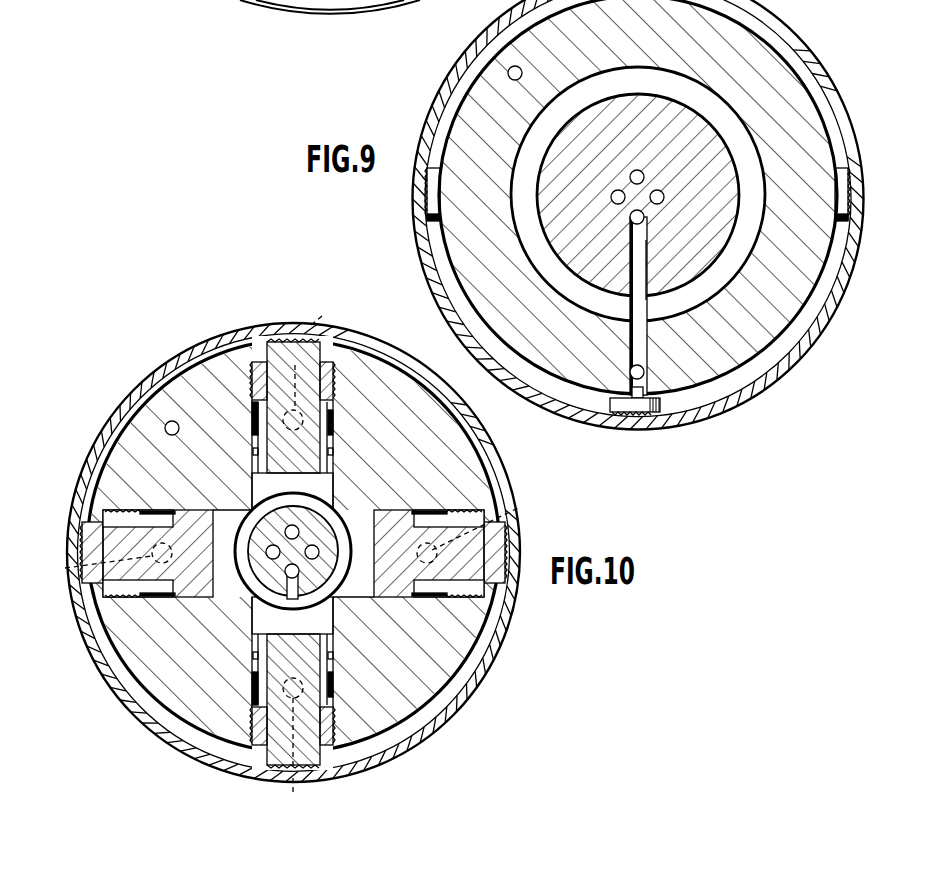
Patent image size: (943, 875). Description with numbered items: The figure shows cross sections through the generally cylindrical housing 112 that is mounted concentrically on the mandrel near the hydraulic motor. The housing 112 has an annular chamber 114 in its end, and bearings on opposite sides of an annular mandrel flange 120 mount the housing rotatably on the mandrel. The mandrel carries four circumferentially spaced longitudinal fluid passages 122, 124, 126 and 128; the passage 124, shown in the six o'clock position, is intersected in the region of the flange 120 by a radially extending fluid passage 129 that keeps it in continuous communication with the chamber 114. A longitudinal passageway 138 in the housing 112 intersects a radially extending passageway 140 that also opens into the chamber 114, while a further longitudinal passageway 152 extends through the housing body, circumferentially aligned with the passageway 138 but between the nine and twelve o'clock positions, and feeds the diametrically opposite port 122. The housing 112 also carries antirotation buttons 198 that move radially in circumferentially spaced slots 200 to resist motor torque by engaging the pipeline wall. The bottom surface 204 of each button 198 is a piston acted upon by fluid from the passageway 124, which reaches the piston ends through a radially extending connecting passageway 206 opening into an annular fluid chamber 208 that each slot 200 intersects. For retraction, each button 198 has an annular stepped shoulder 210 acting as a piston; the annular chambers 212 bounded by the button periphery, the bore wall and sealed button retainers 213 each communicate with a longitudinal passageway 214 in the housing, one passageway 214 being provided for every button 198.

In FIG. 9, the housing 112 is at (772, 72).
In FIG. 9, the annular chamber 114 is at (729, 137).
In FIG. 9, the annular mandrel flange 120 is at (696, 134).
In FIG. 9, the fluid passage 122 is at (638, 170).
In FIG. 9, the fluid passage 124 is at (628, 225).
In FIG. 10, the fluid passage 124 is at (284, 572).
In FIG. 9, the fluid passage 126 is at (611, 198).
In FIG. 9, the fluid passage 128 is at (664, 199).
In FIG. 9, the radially extending fluid passage 129 is at (640, 278).
In FIG. 9, the longitudinal passageway 138 is at (646, 385).
In FIG. 9, the radially extending passageway 140 is at (642, 338).
In FIG. 9, the longitudinally extending passageway 152 is at (507, 73).
In FIG. 10, the longitudinally extending passageway 152 is at (166, 423).
In FIG. 10, the antirotation button 198 is at (280, 345).
In FIG. 10, the radially extending slot 200 is at (292, 553).
In FIG. 10, the bottom surface 204 is at (294, 474).
In FIG. 10, the radially extending connecting passageway 206 is at (302, 593).
In FIG. 10, the annular fluid chamber 208 is at (315, 600).
In FIG. 10, the annular stepped shoulder 210 is at (338, 412).
In FIG. 10, the annular chamber 212 is at (254, 415).
In FIG. 10, the annular sealed button retainer 213 is at (262, 366).
In FIG. 10, the longitudinally extending passageway 214 is at (291, 558).